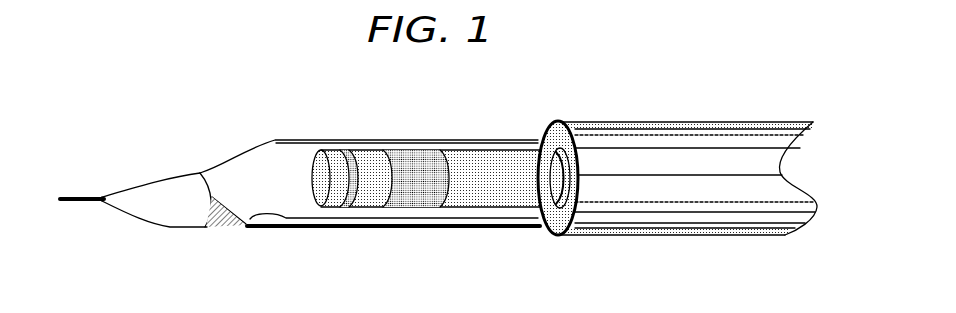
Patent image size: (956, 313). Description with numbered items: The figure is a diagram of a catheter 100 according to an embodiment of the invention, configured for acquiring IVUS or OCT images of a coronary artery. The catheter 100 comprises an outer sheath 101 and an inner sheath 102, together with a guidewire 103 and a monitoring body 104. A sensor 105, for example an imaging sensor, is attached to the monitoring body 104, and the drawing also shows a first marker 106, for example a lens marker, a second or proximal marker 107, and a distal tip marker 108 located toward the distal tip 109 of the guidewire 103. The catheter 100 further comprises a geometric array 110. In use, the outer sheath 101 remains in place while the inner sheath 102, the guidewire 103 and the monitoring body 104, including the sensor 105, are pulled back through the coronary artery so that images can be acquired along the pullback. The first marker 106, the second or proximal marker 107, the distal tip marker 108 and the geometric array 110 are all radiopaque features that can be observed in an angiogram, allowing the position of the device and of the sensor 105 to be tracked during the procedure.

The catheter 100 is at (168, 101).
The outer sheath 101 is at (655, 122).
The inner sheath 102 is at (250, 153).
The guidewire 103 is at (345, 229).
The monitoring body 104 is at (493, 219).
The sensor 105 is at (318, 150).
The first marker 106 is at (348, 150).
The second or proximal marker 107 is at (560, 177).
The distal tip marker 108 is at (150, 224).
The distal tip 109 is at (82, 195).
The geometric array 110 is at (403, 207).